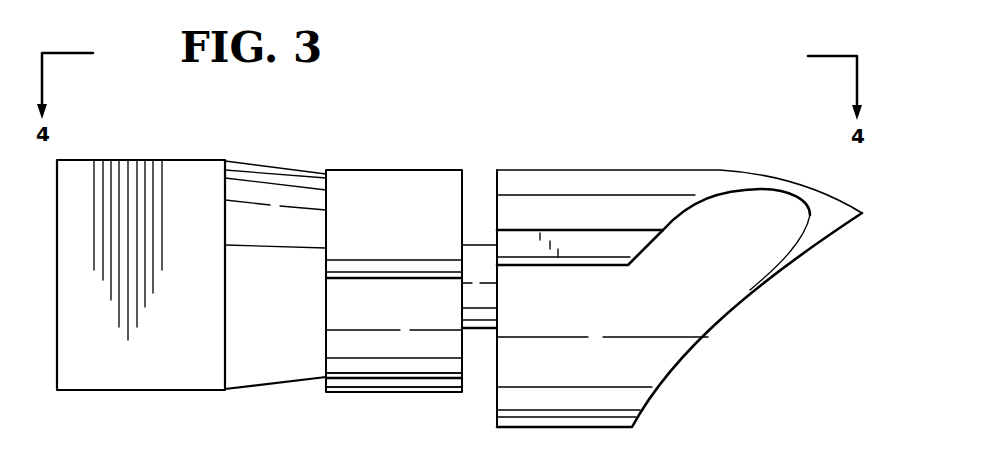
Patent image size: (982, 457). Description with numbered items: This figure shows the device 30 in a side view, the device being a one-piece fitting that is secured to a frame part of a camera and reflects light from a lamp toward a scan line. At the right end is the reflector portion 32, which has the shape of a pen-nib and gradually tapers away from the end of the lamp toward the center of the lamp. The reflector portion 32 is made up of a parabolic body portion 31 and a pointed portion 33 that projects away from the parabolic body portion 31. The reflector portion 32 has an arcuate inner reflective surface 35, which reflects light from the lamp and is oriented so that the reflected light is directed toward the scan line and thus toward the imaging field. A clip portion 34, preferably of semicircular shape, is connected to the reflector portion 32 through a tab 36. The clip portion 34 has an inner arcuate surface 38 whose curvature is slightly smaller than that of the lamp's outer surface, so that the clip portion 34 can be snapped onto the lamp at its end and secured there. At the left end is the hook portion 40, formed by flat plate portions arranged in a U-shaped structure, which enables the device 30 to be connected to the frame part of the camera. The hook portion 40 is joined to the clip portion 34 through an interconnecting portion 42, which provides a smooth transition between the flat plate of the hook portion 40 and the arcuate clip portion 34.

The device 30 is at (676, 234).
The parabolic body portion 31 is at (558, 210).
The reflector portion 32 is at (682, 155).
The pointed portion 33 is at (830, 205).
The clip portion 34 is at (394, 152).
The inner reflective surface 35 is at (672, 323).
The tab 36 is at (477, 232).
The inner arcuate surface 38 is at (403, 348).
The hook portion 40 is at (140, 147).
The interconnecting portion 42 is at (278, 150).